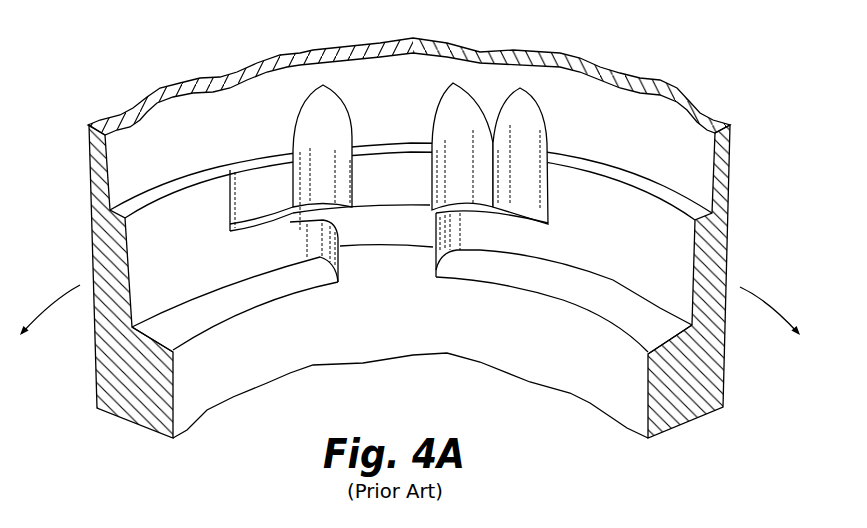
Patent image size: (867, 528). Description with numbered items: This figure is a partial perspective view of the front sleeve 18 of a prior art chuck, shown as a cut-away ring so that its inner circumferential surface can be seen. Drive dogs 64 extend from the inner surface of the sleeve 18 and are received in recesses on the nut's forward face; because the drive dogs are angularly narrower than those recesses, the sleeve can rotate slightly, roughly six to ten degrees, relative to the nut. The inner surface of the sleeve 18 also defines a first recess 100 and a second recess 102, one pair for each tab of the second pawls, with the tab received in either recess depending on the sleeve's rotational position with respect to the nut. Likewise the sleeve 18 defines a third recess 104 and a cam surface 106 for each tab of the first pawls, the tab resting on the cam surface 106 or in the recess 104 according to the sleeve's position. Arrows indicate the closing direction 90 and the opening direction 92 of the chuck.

The front sleeve 18 is at (622, 73).
The drive dog 64 is at (398, 262).
The closing direction 90 is at (50, 303).
The opening direction 92 is at (773, 303).
The first recess 100 is at (455, 128).
The second recess 102 is at (520, 172).
The third recess 104 is at (320, 130).
The cam surface 106 is at (250, 180).